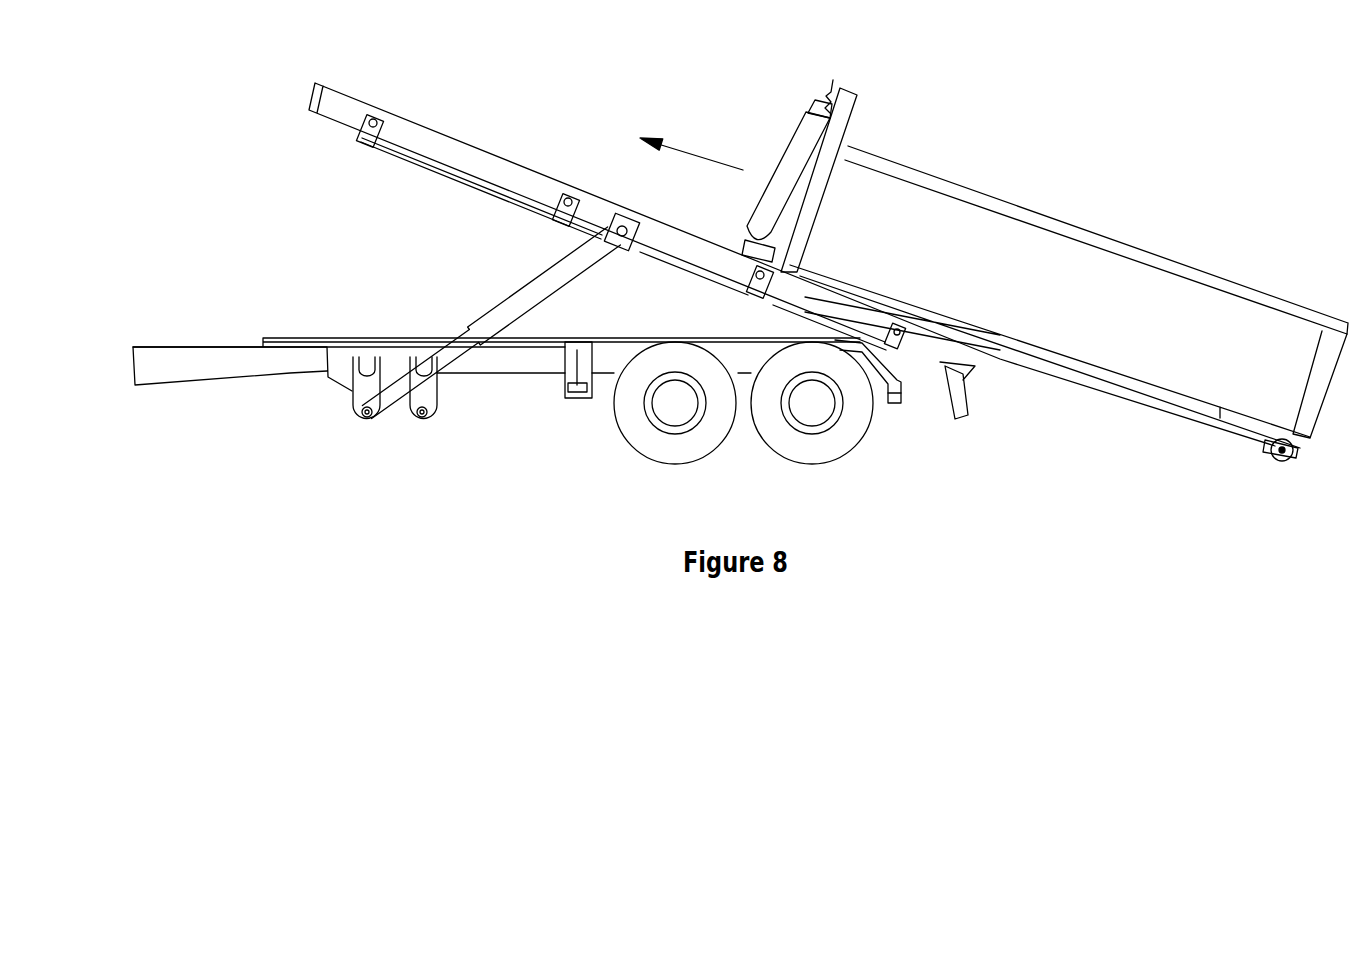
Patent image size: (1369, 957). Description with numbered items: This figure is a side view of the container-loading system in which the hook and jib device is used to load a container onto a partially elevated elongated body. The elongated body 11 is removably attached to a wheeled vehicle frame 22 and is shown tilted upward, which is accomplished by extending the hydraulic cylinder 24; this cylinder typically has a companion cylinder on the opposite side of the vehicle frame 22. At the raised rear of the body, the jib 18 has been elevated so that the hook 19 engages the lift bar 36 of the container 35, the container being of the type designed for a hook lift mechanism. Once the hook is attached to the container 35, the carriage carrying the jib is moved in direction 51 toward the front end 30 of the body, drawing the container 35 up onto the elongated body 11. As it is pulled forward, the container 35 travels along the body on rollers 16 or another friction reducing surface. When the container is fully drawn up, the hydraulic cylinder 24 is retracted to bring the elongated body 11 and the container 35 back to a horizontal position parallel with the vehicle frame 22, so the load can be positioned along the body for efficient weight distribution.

The elongated body 11 is at (453, 150).
The rollers 16 is at (900, 332).
The jib 18 is at (795, 153).
The hook 19 is at (838, 68).
The wheeled vehicle frame 22 is at (503, 363).
The hydraulic cylinder 24 is at (470, 345).
The front end 30 is at (78, 333).
The container 35 is at (940, 257).
The lift bar 36 is at (857, 97).
The forward direction 51 is at (691, 147).